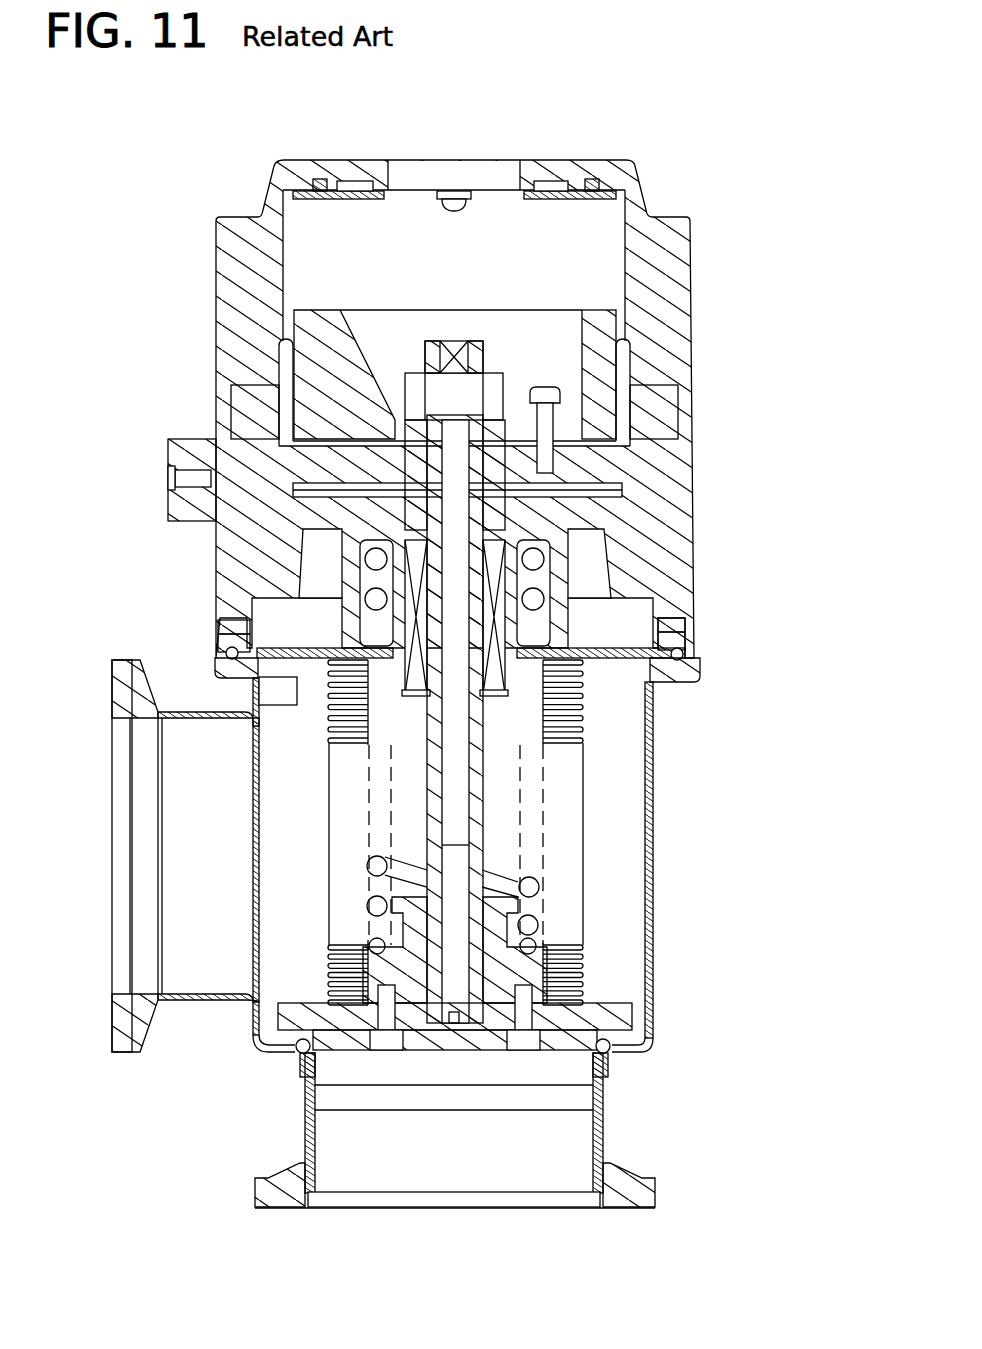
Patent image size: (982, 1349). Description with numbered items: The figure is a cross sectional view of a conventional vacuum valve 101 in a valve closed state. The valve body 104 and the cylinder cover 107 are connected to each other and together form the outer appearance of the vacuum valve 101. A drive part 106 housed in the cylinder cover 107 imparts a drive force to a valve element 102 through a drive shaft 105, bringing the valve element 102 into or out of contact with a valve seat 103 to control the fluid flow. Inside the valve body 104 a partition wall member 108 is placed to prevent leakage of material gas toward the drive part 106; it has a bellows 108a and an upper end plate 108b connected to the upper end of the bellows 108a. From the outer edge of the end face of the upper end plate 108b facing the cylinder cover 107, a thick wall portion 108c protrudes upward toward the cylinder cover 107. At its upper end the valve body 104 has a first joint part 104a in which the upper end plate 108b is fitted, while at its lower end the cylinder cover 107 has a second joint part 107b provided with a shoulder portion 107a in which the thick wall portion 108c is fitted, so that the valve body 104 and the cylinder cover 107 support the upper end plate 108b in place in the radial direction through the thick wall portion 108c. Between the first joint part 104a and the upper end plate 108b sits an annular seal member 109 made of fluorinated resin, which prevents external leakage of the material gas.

The vacuum valve 101 is at (706, 127).
The valve element 102 is at (606, 1000).
The valve seat 103 is at (296, 1052).
The valve body 104 is at (653, 848).
The first joint part 104a is at (692, 676).
The drive shaft 105 is at (474, 800).
The drive part 106 is at (588, 300).
The cylinder cover 107 is at (694, 470).
The shoulder portion 107a is at (694, 556).
The second joint part 107b is at (690, 626).
The partition wall member 108 is at (605, 900).
The bellows 108a is at (585, 745).
The upper end plate 108b is at (592, 656).
The thick wall portion 108c is at (676, 612).
The annular seal member 109 is at (683, 655).